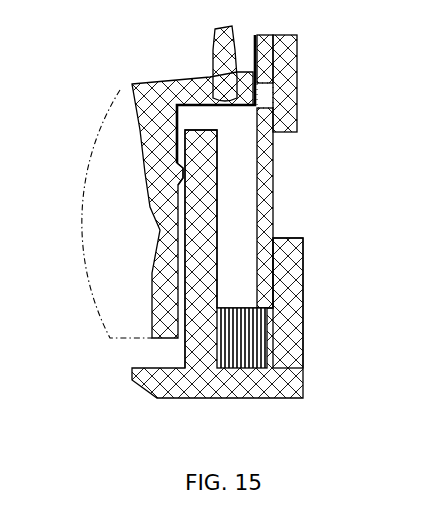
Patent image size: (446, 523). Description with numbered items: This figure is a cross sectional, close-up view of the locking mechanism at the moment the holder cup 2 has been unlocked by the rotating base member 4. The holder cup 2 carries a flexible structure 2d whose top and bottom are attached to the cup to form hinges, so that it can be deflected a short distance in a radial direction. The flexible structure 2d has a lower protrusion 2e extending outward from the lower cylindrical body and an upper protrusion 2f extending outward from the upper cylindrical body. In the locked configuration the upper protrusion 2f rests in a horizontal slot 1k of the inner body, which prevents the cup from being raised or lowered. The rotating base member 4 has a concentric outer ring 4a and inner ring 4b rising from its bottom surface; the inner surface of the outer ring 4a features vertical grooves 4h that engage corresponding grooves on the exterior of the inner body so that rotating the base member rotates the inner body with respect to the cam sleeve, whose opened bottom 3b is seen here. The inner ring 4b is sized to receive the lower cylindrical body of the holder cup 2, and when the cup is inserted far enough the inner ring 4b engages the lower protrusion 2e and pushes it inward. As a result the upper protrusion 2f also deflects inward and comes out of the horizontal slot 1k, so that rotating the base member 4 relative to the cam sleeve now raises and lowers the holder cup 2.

The holder cup 2 is at (212, 50).
The flexible structure 2d is at (142, 163).
The lower protrusion 2e is at (180, 178).
The upper protrusion 2f is at (252, 83).
The horizontal slot 1k is at (267, 97).
The opened bottom 3b is at (285, 133).
The rotating base member 4 is at (305, 397).
The outer ring 4a is at (303, 273).
The inner ring 4b is at (187, 348).
The vertical grooves 4h is at (267, 339).